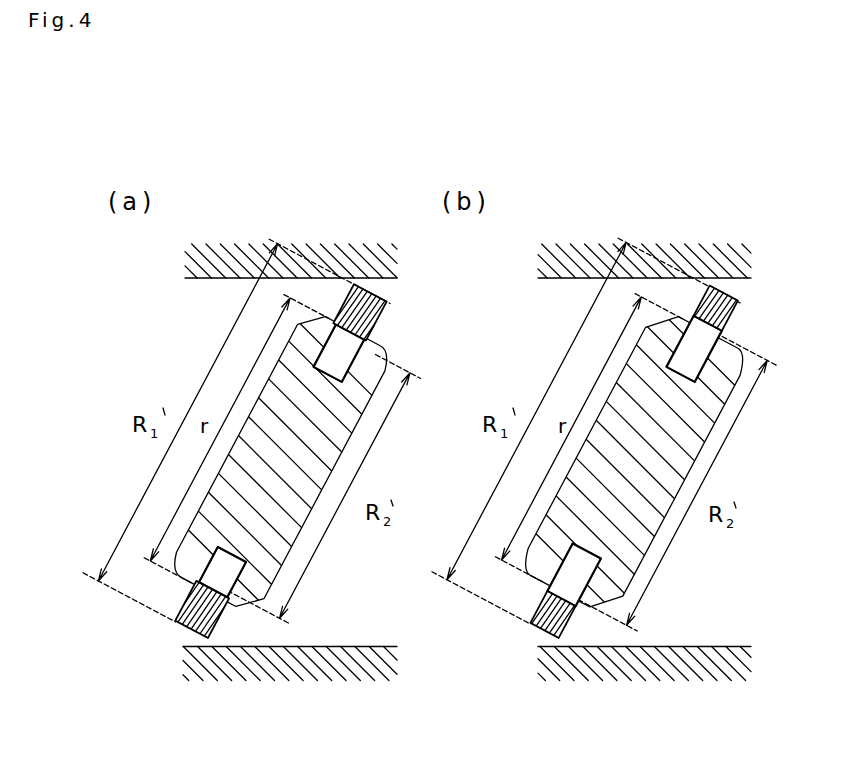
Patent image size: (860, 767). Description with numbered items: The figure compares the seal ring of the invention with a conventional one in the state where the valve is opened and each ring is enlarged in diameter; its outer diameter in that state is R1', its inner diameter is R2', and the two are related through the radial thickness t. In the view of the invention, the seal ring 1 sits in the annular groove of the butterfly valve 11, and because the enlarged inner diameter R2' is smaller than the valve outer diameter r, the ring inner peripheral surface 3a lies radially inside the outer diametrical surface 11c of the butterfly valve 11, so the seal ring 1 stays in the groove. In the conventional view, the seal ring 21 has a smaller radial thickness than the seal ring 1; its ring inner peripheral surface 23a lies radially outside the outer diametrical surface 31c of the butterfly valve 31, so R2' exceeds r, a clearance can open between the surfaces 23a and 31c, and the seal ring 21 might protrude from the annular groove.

The seal ring 1 is at (164, 640).
The ring inner peripheral surface 3a is at (207, 560).
The butterfly valve 11 is at (316, 533).
The outer diametrical surface 11c is at (216, 565).
The seal ring 21 is at (520, 637).
The ring inner peripheral surface 23a is at (556, 577).
The butterfly valve 31 is at (670, 534).
The outer diametrical surface 31c is at (565, 562).